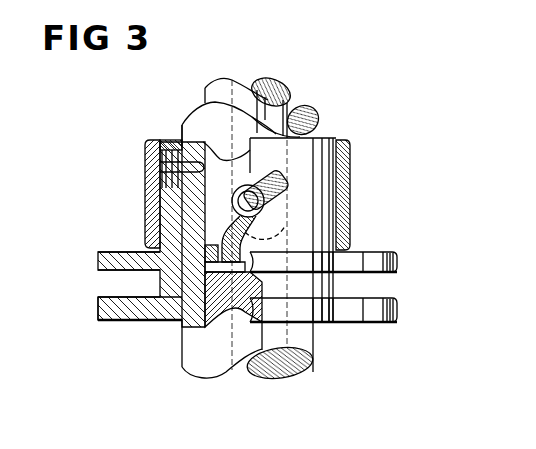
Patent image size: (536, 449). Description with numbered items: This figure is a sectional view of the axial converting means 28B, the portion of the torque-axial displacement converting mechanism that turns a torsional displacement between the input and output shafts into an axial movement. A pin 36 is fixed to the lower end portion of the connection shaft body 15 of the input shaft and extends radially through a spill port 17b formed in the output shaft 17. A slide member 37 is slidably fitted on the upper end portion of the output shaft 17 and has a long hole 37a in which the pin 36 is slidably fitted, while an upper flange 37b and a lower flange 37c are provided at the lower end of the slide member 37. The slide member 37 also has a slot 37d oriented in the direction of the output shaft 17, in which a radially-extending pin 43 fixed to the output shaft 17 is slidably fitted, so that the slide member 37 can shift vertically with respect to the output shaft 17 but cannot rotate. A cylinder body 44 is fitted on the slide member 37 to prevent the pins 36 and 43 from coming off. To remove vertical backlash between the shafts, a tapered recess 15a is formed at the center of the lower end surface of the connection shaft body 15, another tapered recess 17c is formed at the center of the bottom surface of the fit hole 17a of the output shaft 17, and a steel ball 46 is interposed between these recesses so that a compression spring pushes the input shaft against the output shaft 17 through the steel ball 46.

The connection shaft body 15 is at (290, 103).
The tapered recess 15a is at (203, 268).
The output shaft 17 is at (313, 345).
The fit hole 17a is at (203, 130).
The spill port 17b is at (232, 197).
The tapered recess 17c is at (122, 320).
The axial converting means 28B is at (128, 240).
The pin 36 is at (282, 198).
The slide member 37 is at (338, 143).
The long hole 37a is at (265, 203).
The upper flange 37b is at (398, 262).
The lower flange 37c is at (398, 310).
The slot 37d is at (160, 178).
The pin 43 is at (158, 163).
The cylinder body 44 is at (347, 173).
The steel ball 46 is at (205, 314).